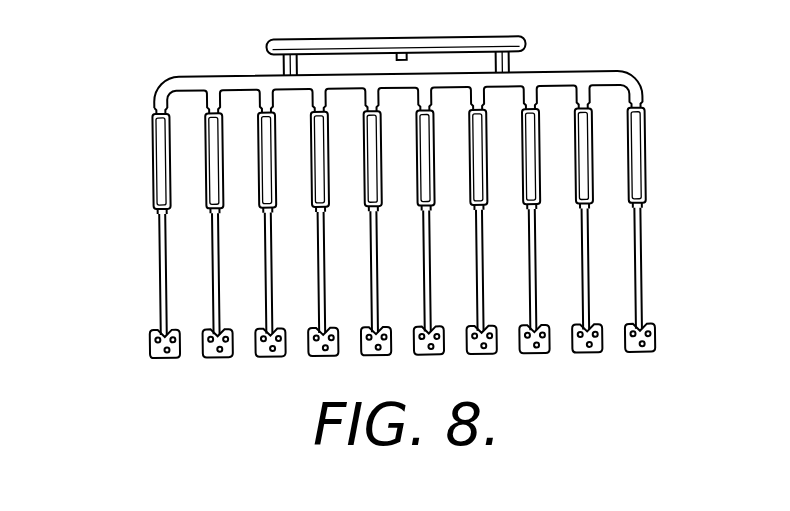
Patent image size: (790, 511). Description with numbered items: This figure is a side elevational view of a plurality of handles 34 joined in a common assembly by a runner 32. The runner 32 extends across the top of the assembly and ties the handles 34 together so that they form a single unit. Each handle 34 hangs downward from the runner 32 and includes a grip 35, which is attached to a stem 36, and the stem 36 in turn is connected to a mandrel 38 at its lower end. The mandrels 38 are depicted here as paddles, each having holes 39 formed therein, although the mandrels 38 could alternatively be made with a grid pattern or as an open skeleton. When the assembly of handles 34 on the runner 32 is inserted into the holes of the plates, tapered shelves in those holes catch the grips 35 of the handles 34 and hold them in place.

The runner 32 is at (163, 90).
The handle 34 is at (148, 143).
The grip 35 is at (160, 197).
The stem 36 is at (162, 265).
The mandrel 38 is at (149, 350).
The hole 39 is at (167, 353).